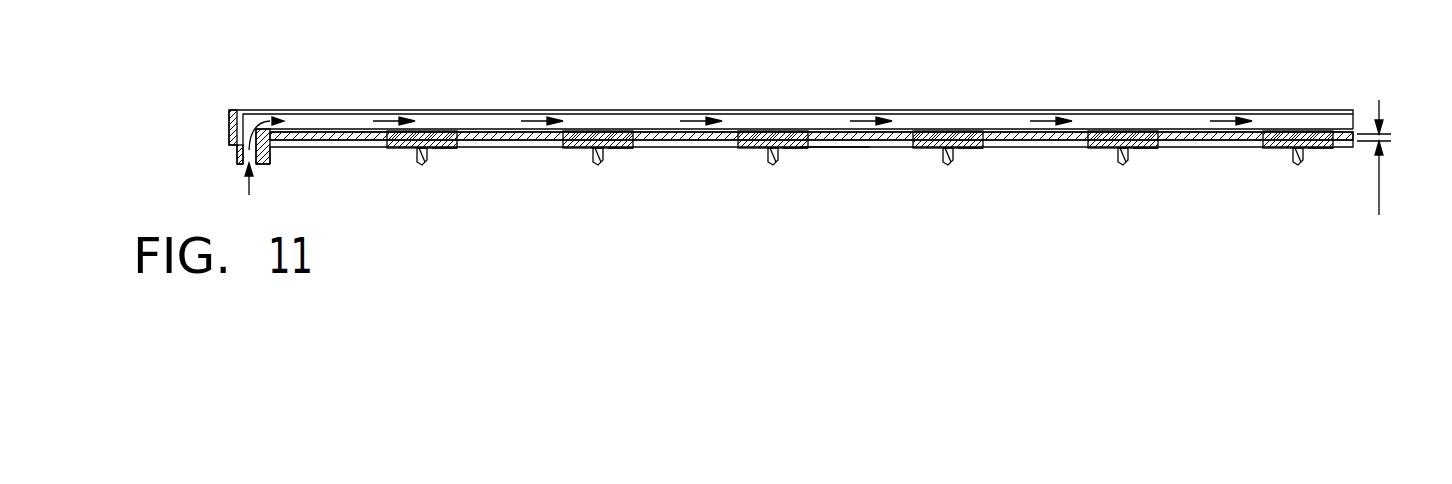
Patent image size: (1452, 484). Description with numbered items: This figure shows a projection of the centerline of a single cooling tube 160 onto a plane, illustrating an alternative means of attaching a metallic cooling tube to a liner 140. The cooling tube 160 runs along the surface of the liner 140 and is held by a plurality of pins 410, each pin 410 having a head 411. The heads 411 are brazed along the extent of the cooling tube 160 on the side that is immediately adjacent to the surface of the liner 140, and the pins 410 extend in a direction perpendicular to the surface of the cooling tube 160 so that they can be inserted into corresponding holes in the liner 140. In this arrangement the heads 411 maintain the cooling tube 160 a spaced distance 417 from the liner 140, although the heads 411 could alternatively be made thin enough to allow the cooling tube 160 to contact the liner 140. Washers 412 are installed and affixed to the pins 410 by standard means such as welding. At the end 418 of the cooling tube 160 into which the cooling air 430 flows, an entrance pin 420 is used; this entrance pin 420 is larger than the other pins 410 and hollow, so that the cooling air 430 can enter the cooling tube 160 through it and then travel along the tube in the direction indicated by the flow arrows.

The end 418 is at (277, 86).
The cooling tube 160 is at (726, 110).
The entrance pin 420 is at (232, 148).
The cooling air 430 is at (250, 183).
The head 411 is at (387, 142).
The pin 410 is at (417, 160).
The washer 412 is at (446, 148).
The liner 140 is at (837, 150).
The spaced distance 417 is at (1378, 197).